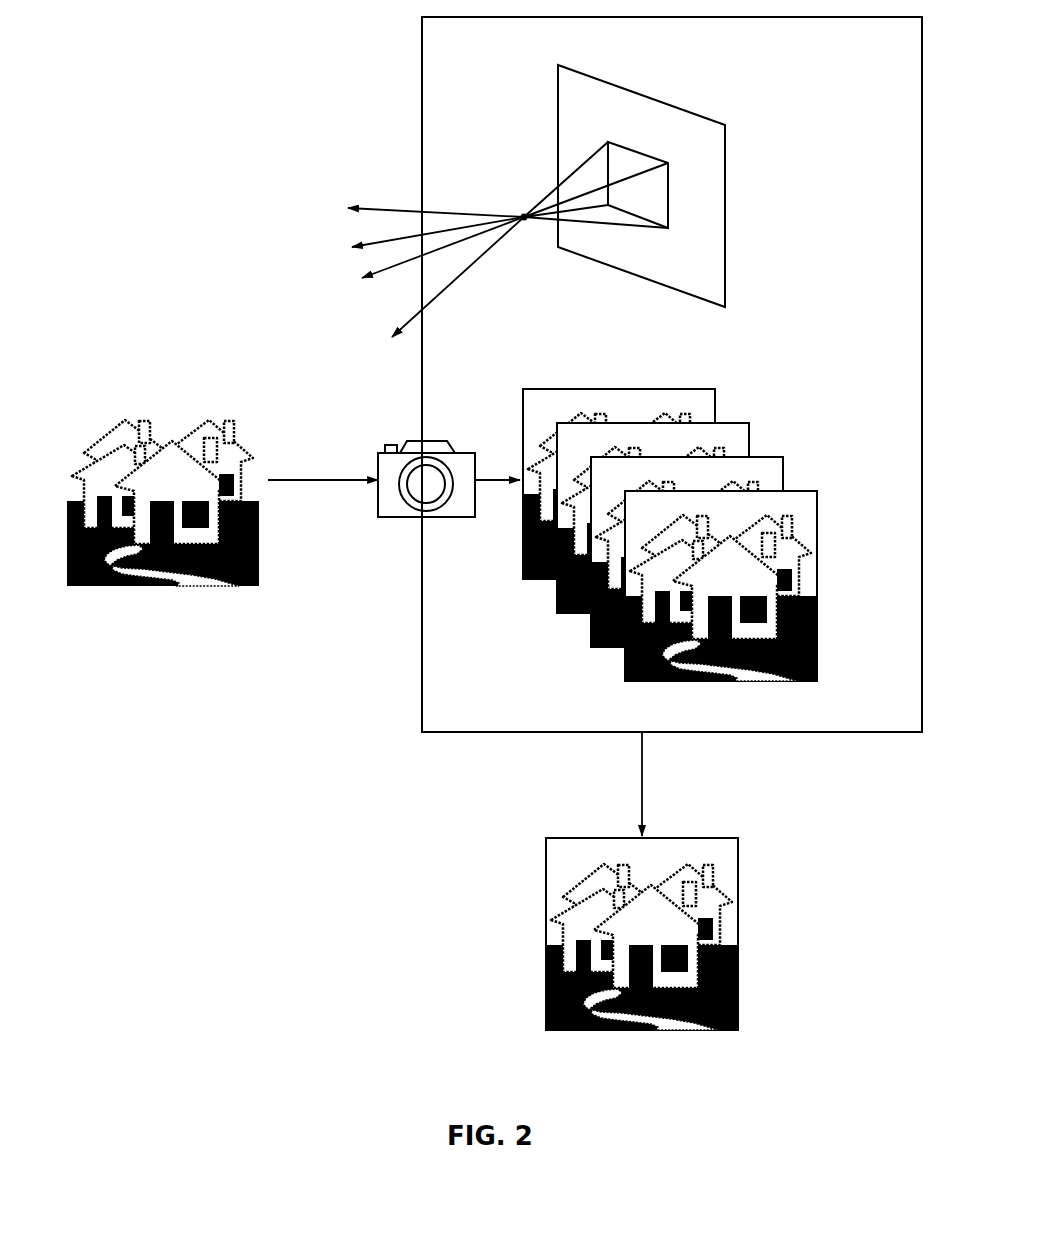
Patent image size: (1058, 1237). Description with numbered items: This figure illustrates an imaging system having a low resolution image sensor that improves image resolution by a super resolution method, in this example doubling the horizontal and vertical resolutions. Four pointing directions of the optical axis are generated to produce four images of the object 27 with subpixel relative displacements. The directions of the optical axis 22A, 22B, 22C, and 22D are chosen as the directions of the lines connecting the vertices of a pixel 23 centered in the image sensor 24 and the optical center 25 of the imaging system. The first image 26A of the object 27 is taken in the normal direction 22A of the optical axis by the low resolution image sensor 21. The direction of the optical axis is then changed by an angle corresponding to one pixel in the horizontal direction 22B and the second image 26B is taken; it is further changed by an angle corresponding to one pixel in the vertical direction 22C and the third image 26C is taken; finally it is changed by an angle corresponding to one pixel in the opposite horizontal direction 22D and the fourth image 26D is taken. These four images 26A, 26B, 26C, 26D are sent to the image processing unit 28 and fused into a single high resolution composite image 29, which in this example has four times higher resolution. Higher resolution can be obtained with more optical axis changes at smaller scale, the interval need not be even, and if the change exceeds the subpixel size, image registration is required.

The low resolution image sensor 21 is at (377, 529).
The direction of the optical axis (normal direction) 22A is at (434, 287).
The direction of the optical axis (horizontal) 22B is at (421, 260).
The direction of the optical axis (vertical) 22C is at (405, 205).
The direction of the optical axis (opposite horizontal) 22D is at (413, 240).
The pixel 23 is at (672, 200).
The image sensor 24 is at (647, 95).
The optical center 25 is at (526, 225).
The first image 26A is at (803, 508).
The second image 26B is at (770, 475).
The third image 26C is at (737, 440).
The fourth image 26D is at (704, 407).
The object 27 is at (162, 402).
The image processing unit 28 is at (412, 705).
The high resolution composite image 29 is at (542, 908).